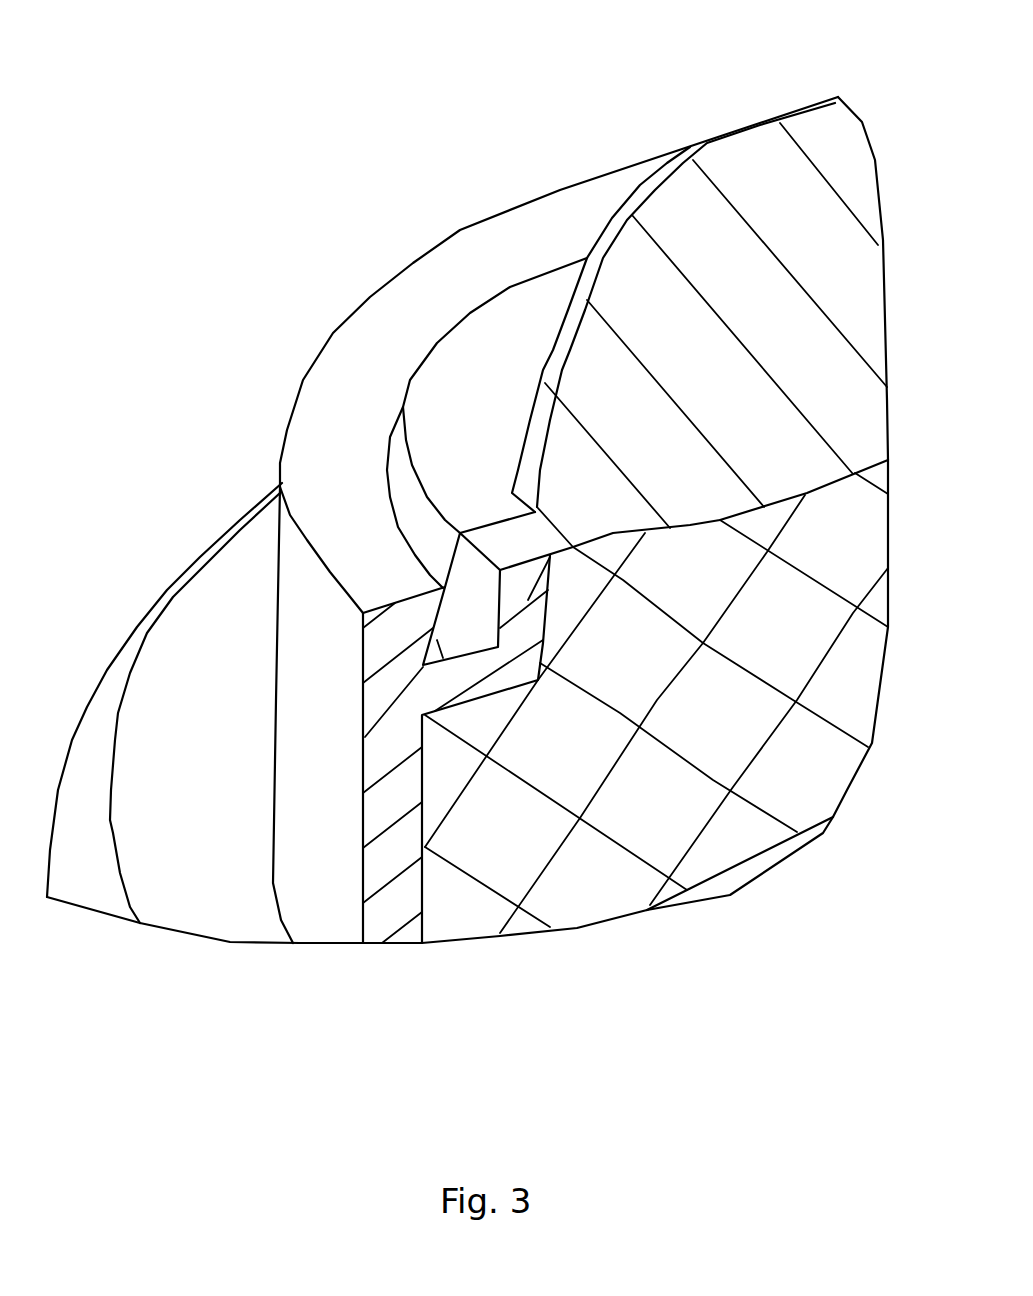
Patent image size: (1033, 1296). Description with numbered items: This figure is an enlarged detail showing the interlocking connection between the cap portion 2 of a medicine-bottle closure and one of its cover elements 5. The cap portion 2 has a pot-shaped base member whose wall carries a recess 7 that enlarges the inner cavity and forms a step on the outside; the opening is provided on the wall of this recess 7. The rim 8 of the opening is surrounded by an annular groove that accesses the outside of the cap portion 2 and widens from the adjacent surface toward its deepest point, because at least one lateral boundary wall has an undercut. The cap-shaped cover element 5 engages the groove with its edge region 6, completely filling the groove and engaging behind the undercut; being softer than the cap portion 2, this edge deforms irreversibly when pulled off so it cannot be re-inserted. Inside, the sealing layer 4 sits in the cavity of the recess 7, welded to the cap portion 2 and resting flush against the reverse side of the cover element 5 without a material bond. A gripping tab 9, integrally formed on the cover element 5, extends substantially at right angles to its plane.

The cap portion 2 is at (183, 912).
The sealing layer 4 is at (568, 900).
The cover element 5 is at (495, 352).
The edge region 6 is at (467, 617).
The recess 7 is at (320, 917).
The rim 8 is at (522, 627).
The gripping tab 9 is at (813, 137).